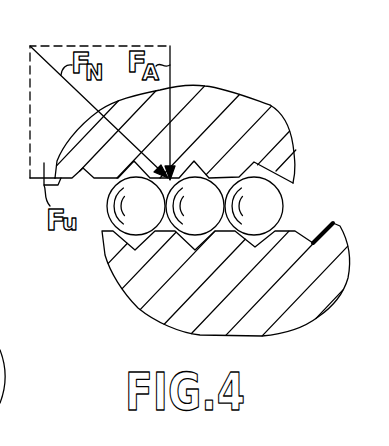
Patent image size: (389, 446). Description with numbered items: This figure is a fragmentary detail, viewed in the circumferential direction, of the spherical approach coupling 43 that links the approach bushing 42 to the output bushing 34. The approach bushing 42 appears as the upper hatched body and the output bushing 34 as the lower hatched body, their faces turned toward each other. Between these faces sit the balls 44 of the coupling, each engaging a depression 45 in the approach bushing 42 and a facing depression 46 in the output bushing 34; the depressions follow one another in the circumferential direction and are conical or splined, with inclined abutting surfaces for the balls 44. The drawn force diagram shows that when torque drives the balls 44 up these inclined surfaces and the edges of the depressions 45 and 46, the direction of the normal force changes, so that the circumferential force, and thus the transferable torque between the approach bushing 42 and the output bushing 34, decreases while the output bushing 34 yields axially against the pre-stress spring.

The approach bushing 42 is at (217, 101).
The spherical approach coupling 43 is at (292, 125).
The depression 45 is at (242, 174).
The balls 44 is at (272, 203).
The depression 46 is at (289, 226).
The output bushing 34 is at (306, 312).